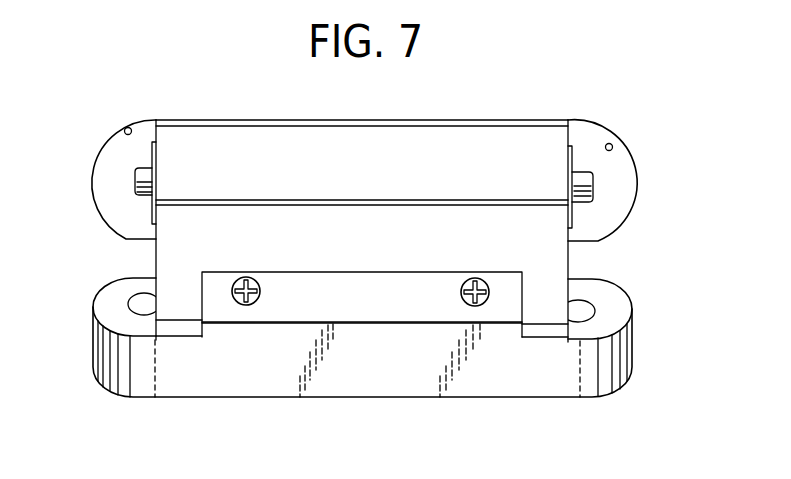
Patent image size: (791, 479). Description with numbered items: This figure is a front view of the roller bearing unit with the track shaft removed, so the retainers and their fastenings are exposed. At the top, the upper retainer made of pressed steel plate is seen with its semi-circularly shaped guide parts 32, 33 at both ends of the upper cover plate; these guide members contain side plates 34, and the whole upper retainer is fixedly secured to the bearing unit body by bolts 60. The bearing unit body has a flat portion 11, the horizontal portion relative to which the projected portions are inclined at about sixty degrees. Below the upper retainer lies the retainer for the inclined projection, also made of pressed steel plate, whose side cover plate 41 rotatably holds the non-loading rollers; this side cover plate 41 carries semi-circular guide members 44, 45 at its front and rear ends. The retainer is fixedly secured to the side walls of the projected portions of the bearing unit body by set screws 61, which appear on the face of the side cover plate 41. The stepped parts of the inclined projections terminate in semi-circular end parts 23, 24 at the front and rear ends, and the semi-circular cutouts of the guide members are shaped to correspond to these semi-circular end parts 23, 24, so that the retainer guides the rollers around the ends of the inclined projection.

The flat portion 11 is at (230, 137).
The semi-circularly shaped guide part 32 is at (125, 130).
The semi-circularly shaped guide part 33 is at (611, 146).
The side plate 34 is at (108, 172).
The bolt 60 is at (137, 186).
The set screw 61 is at (246, 278).
The semi-circular end part 23 is at (137, 298).
The semi-circular end part 24 is at (578, 306).
The side cover plate 41 is at (485, 380).
The semi-circular guide member 44 is at (102, 337).
The semi-circular guide member 45 is at (615, 343).